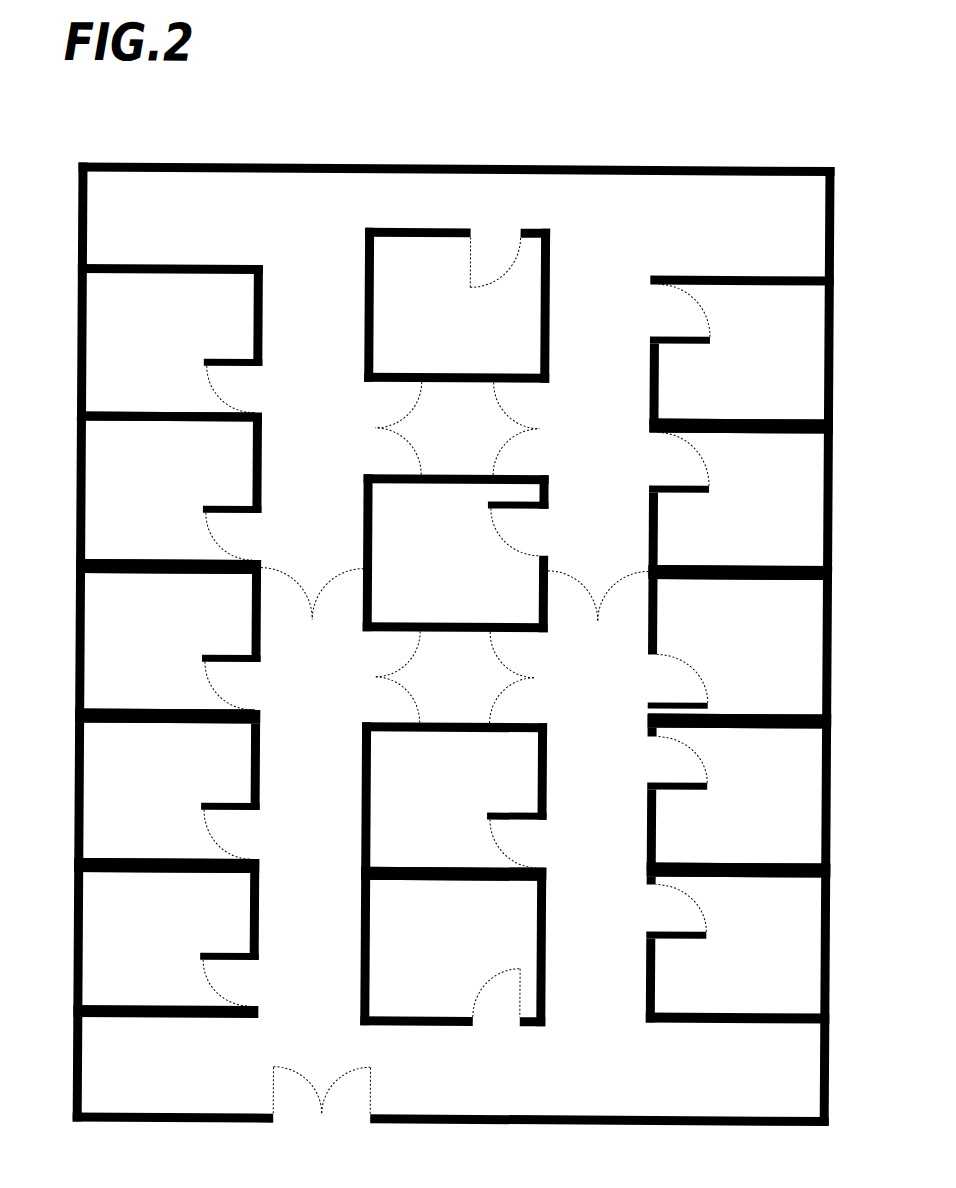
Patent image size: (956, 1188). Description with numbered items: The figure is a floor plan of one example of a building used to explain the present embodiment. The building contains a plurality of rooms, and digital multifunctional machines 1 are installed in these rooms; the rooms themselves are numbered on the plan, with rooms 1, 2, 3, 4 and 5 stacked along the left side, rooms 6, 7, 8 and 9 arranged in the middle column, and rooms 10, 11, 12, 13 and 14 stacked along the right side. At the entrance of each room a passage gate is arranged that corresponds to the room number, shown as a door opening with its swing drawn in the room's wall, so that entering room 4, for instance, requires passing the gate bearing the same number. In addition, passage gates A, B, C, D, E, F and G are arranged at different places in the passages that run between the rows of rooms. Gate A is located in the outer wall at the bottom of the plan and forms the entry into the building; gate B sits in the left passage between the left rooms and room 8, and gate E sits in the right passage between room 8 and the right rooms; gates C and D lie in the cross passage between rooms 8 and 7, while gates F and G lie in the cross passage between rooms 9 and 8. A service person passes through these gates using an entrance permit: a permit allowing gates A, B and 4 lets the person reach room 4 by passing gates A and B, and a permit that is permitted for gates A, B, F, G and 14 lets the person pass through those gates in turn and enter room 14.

The digital multifunctional machine 1 is at (166, 938).
The room 2 is at (167, 790).
The room 3 is at (168, 641).
The room 4 is at (169, 492).
The room 5 is at (170, 343).
The room 6 is at (453, 947).
The room 7 is at (454, 801).
The room 8 is at (456, 553).
The room 9 is at (457, 305).
The room 10 is at (738, 942).
The room 11 is at (739, 795).
The room 12 is at (740, 647).
The room 13 is at (740, 499).
The room 14 is at (741, 354).
The passage gate A is at (321, 1087).
The passage gate B is at (312, 587).
The passage gate C is at (400, 676).
The passage gate D is at (510, 677).
The passage gate E is at (598, 588).
The passage gate F is at (399, 428).
The passage gate G is at (512, 428).